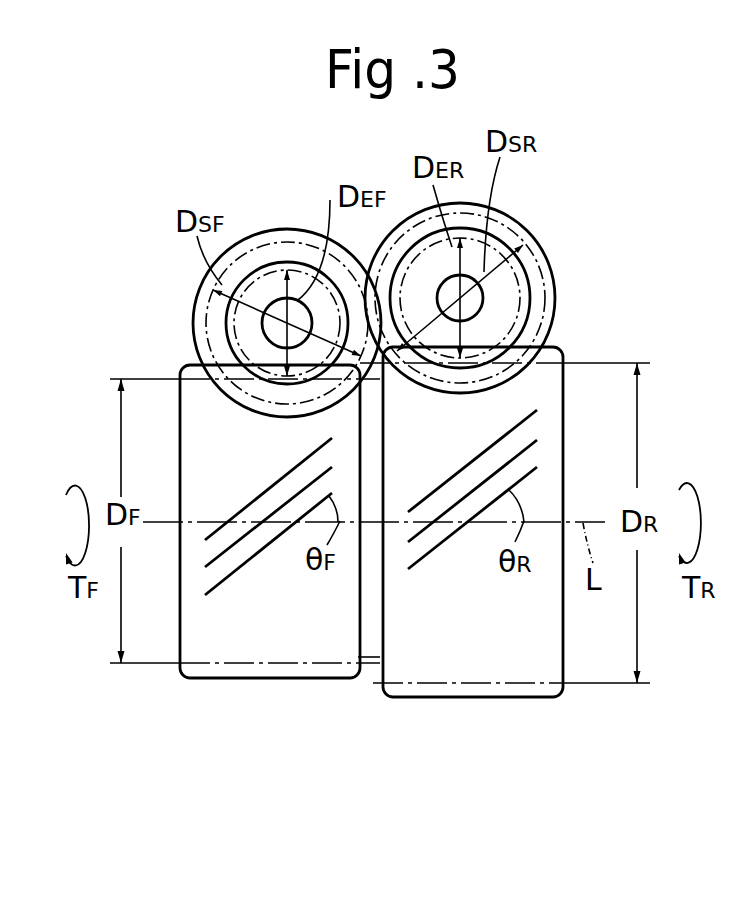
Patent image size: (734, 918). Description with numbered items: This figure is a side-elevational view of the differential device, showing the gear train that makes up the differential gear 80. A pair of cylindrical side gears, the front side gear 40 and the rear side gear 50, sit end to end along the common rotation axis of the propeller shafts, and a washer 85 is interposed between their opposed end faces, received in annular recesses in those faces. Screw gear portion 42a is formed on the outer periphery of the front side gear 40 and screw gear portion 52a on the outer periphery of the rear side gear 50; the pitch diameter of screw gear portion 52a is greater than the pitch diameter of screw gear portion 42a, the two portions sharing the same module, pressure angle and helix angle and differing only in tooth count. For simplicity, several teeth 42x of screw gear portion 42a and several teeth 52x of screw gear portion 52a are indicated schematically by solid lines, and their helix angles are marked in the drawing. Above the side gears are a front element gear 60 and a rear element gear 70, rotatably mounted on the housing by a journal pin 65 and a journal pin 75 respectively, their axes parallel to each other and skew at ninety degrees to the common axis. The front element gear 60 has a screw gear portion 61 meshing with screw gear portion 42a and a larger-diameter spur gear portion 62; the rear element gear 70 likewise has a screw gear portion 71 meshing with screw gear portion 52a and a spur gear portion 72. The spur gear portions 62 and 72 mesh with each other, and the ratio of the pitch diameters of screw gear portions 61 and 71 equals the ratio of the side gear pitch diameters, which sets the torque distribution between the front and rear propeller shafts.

The front side gear 40 is at (283, 690).
The screw gear portion 42a is at (222, 682).
The teeth 42x is at (257, 498).
The rear side gear 50 is at (475, 705).
The screw gear portion 52a is at (425, 698).
The teeth 52x is at (450, 473).
The front element gear 60 is at (284, 229).
The screw gear portion 61 is at (273, 262).
The spur gear portion 62 is at (300, 228).
The journal pin 65 is at (258, 320).
The rear element gear 70 is at (512, 209).
The screw gear portion 71 is at (533, 280).
The spur gear portion 72 is at (527, 227).
The journal pin 75 is at (482, 305).
The differential gear 80 is at (518, 707).
The washer 85 is at (372, 650).